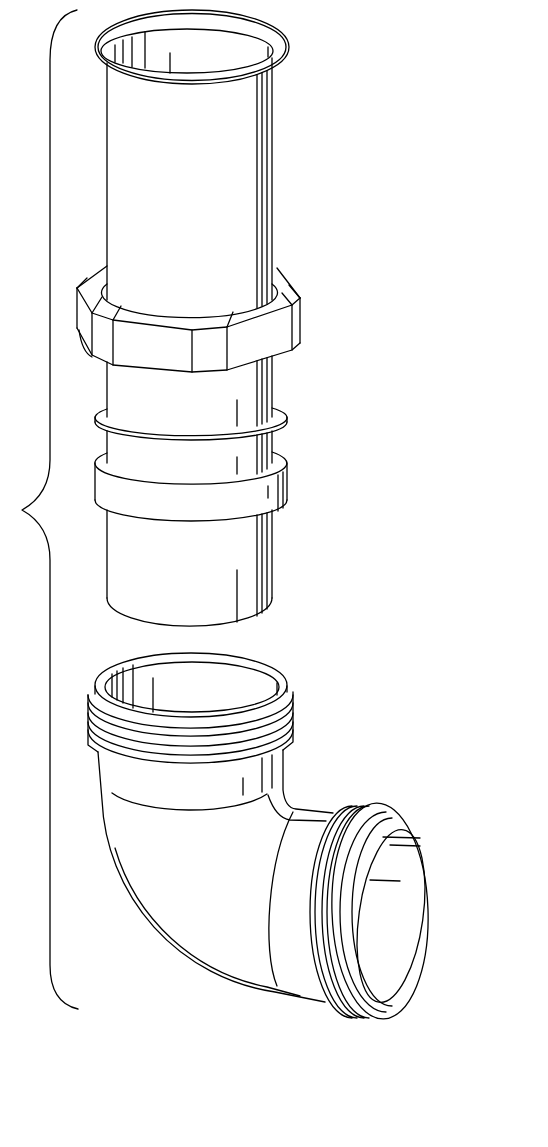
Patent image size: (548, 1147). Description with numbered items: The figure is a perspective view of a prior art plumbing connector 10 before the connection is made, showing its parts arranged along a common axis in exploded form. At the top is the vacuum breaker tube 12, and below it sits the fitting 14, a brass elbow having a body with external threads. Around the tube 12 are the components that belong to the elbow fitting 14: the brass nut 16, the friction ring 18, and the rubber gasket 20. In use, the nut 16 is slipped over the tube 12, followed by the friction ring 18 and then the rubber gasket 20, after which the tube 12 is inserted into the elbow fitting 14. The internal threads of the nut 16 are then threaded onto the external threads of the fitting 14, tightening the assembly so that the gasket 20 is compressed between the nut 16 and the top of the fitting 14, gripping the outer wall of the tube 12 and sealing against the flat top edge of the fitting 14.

The connector 10 is at (447, 329).
The vacuum breaker tube 12 is at (277, 147).
The elbow fitting 14 is at (285, 770).
The brass nut 16 is at (305, 325).
The friction ring 18 is at (290, 420).
The rubber gasket 20 is at (290, 480).